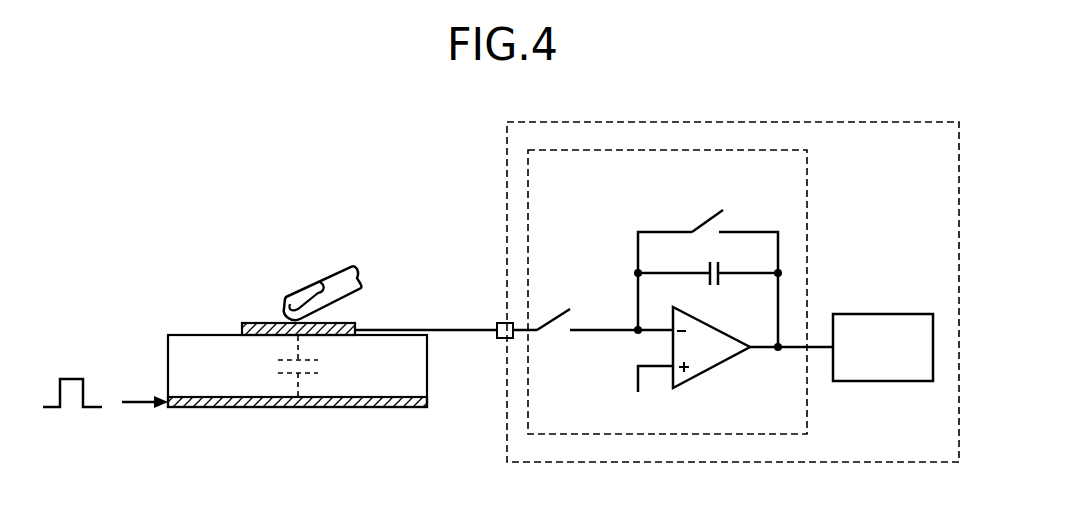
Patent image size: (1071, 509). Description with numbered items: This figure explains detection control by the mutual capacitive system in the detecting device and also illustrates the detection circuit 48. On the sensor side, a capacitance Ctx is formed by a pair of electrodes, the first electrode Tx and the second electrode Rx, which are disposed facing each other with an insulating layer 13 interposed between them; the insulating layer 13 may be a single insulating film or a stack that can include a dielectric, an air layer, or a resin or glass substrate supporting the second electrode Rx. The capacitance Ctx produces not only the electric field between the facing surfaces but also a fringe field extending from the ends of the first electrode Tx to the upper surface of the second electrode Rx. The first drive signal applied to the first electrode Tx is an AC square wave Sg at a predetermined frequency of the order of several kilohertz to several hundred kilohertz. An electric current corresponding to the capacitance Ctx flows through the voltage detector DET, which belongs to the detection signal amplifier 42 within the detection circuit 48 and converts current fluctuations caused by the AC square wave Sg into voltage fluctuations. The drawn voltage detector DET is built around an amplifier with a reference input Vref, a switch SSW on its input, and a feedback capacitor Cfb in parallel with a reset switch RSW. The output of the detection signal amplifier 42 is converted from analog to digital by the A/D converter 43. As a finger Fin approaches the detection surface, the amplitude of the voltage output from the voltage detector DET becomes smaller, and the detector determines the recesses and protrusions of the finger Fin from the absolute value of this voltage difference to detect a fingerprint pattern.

The insulating layer 13 is at (427, 383).
The detection signal amplifier 42 is at (808, 166).
The A/D converter 43 is at (901, 295).
The detection circuit 48 is at (916, 104).
The AC square wave Sg is at (77, 378).
The first electrode Tx is at (368, 407).
The second electrode Rx is at (256, 322).
The capacitance Ctx is at (321, 366).
The finger Fin is at (327, 271).
The sampling switch SSW is at (557, 309).
The reset switch RSW is at (712, 214).
The feedback capacitor Cfb is at (720, 268).
The voltage detector DET is at (613, 205).
The reference voltage Vref is at (645, 393).